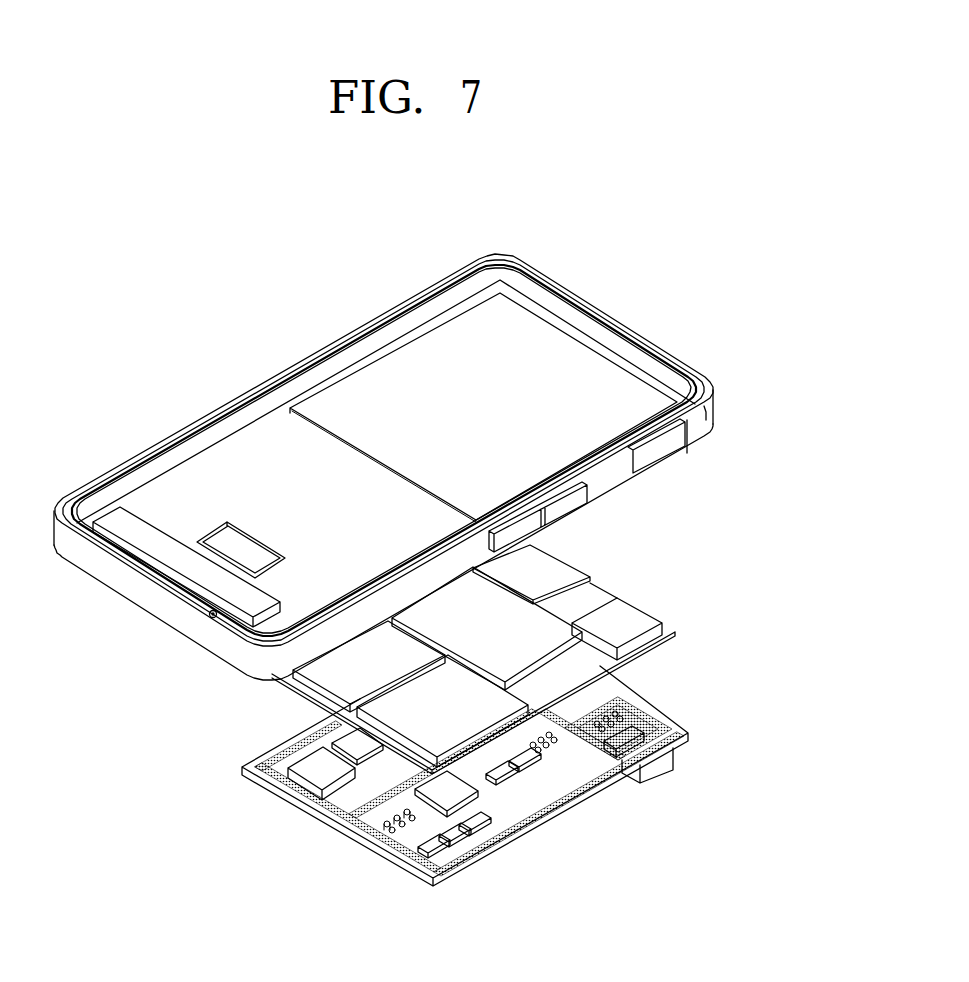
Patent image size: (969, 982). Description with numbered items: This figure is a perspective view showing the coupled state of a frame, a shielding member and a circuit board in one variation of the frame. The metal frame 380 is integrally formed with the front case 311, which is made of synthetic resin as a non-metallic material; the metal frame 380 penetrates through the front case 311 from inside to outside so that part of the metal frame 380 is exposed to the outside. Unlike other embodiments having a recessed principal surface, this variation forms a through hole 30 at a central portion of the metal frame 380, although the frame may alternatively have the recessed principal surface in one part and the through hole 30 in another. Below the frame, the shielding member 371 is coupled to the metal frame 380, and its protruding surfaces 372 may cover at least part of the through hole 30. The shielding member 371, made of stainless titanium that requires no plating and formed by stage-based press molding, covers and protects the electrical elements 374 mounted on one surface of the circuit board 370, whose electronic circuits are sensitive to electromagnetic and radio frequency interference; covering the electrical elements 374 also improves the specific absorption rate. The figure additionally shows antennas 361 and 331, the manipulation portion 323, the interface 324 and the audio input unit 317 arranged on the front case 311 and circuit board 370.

The through hole 30 is at (573, 365).
The front case 311 is at (702, 423).
The audio input unit 317 is at (210, 617).
The manipulation portion 323 is at (567, 505).
The interface 324 is at (668, 450).
The antenna 331 is at (657, 774).
The antenna 361 is at (163, 556).
The circuit board 370 is at (680, 733).
The shielding member 371 is at (683, 628).
The protruding surface 372 is at (632, 612).
The electrical element 374 is at (632, 732).
The metal frame 380 is at (713, 394).